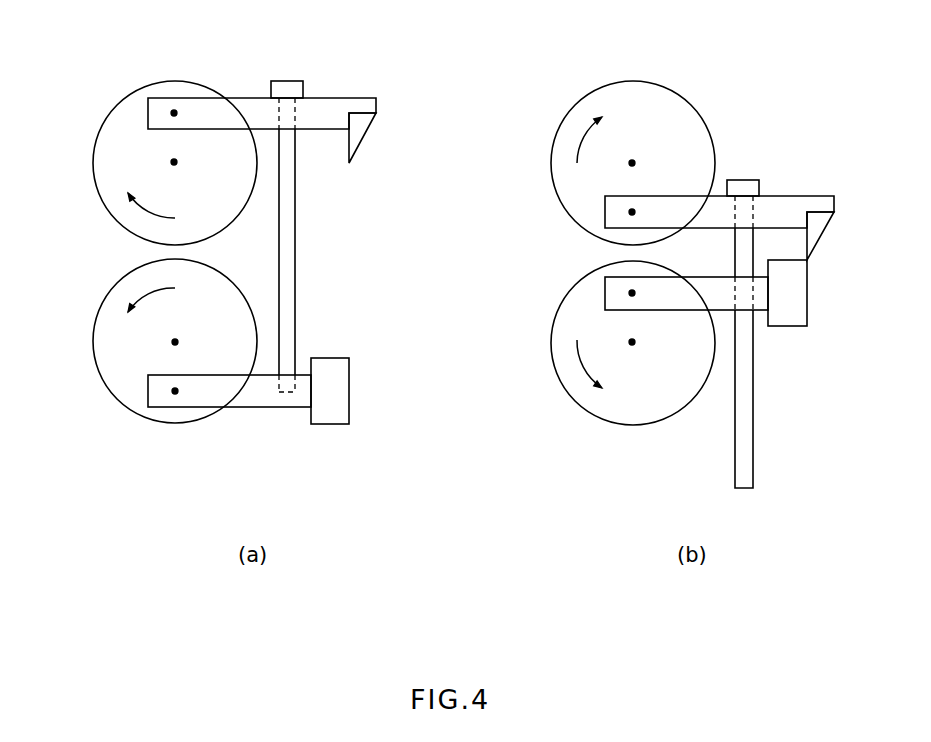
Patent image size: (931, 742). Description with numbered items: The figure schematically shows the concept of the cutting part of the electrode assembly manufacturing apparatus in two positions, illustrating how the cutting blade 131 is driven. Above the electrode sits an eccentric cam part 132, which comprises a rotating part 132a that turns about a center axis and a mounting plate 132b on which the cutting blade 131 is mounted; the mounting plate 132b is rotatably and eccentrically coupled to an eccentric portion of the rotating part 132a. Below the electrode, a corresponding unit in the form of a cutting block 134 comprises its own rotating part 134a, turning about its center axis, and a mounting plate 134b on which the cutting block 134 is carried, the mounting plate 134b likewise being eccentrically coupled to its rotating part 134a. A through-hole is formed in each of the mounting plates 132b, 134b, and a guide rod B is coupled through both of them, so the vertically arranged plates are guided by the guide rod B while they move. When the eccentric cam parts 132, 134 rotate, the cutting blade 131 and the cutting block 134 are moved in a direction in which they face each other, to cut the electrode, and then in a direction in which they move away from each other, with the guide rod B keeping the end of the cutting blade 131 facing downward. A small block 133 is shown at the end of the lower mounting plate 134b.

The cutting blade 131 is at (363, 137).
The eccentric cam part 132 is at (237, 82).
The rotating part 132a is at (93, 161).
The mounting plate 132b is at (325, 97).
The fixing block 133 is at (349, 389).
The cutting block 134 is at (276, 430).
The rotating part 134a is at (92, 341).
The mounting plate 134b is at (238, 408).
The guide rod B is at (295, 252).